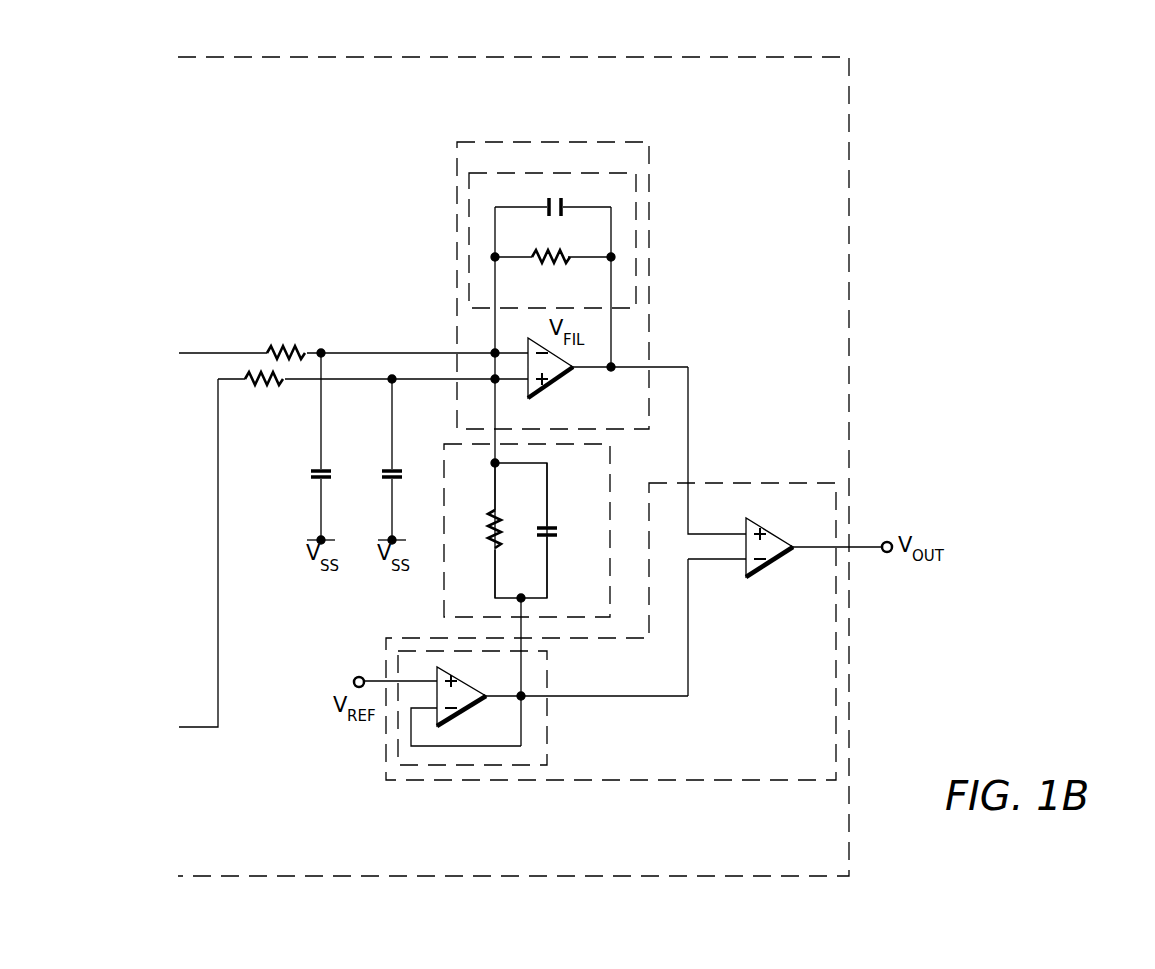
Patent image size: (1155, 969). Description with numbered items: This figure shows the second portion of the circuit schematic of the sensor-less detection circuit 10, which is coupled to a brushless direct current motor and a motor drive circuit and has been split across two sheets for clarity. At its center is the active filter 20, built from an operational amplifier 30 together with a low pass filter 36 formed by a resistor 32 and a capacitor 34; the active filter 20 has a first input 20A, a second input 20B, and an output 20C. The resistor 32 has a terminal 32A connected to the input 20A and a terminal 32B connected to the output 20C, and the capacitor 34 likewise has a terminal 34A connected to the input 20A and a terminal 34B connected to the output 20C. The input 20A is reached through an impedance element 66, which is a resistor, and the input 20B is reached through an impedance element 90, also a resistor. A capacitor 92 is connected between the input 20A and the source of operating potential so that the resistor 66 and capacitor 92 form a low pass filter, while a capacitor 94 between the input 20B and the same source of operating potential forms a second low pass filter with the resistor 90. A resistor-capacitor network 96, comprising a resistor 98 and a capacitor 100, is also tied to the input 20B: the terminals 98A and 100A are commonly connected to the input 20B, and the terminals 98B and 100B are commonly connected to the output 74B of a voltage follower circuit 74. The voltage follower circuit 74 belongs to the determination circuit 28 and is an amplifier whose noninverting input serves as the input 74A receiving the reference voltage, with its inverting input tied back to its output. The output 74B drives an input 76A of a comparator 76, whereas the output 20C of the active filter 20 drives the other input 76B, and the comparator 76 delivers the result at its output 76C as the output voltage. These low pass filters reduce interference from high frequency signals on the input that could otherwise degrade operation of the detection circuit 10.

The sensor-less detection circuit 10 is at (350, 57).
The active filter 20 is at (616, 142).
The input of active filter 20A is at (450, 352).
The input of active filter 20B is at (437, 381).
The output of active filter 20C is at (634, 370).
The determination circuit 28 is at (742, 483).
The amplifier 30 is at (552, 383).
The resistor 32 is at (540, 250).
The terminal of resistor 32A is at (507, 262).
The terminal of resistor 32B is at (587, 261).
The capacitor 34 is at (557, 210).
The terminal of capacitor 34A is at (527, 206).
The terminal of capacitor 34B is at (570, 208).
The low pass filter 36 is at (564, 173).
The impedance element 66 is at (280, 349).
The voltage follower circuit 74 is at (547, 690).
The input of voltage follower circuit 74A is at (355, 678).
The output of voltage follower circuit 74B is at (499, 694).
The comparator 76 is at (764, 526).
The input of comparator 76A is at (722, 562).
The input of comparator 76B is at (728, 532).
The output of comparator 76C is at (808, 550).
The impedance element 90 is at (262, 390).
The capacitor 92 is at (329, 481).
The capacitor 94 is at (384, 471).
The resistor-capacitor network 96 is at (609, 484).
The resistor 98 is at (499, 515).
The terminal of resistor 98A is at (492, 500).
The terminal of resistor 98B is at (492, 562).
The capacitor 100 is at (537, 538).
The terminal of capacitor 100A is at (549, 516).
The terminal of capacitor 100B is at (549, 553).